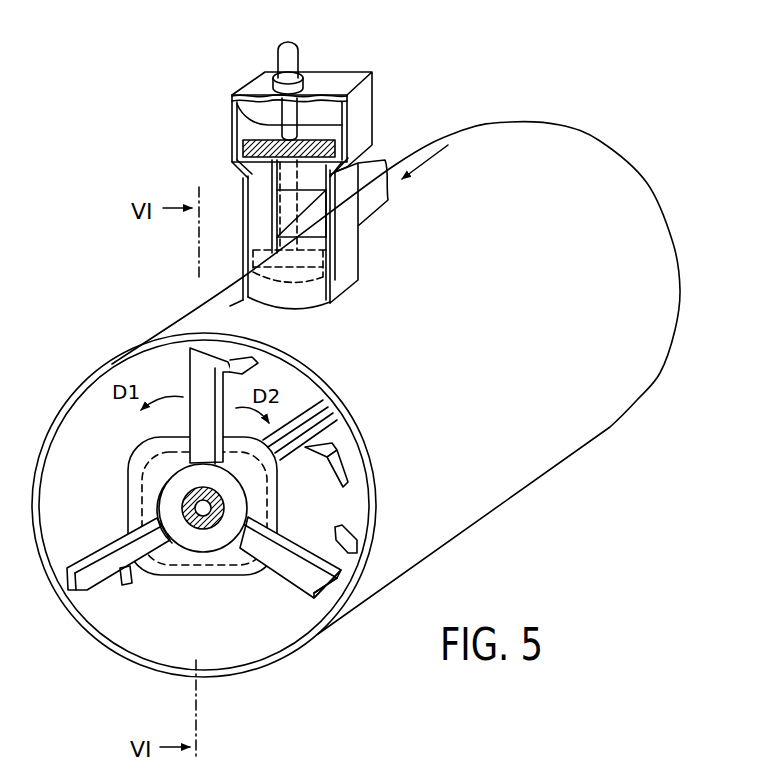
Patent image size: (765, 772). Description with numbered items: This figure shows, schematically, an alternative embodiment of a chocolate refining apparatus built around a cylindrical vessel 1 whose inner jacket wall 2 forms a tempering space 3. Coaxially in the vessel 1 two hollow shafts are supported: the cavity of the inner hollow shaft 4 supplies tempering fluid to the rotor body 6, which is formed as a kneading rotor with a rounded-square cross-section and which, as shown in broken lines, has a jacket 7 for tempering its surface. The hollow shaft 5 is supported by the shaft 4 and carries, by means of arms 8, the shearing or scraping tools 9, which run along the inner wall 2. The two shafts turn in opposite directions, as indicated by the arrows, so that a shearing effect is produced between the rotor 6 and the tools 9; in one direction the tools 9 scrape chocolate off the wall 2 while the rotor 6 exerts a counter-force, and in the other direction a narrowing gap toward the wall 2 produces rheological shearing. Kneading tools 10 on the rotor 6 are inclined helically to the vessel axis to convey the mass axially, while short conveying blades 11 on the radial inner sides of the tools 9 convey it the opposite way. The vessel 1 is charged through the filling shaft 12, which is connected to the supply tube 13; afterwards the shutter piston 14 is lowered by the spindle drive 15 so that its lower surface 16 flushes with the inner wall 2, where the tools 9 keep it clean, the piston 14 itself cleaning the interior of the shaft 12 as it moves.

The cylindrical vessel 1 is at (503, 487).
The inner jacket wall 2 is at (235, 653).
The tempering space 3 is at (275, 661).
The inner hollow shaft 4 is at (193, 530).
The hollow shaft 5 is at (218, 540).
The rotor body 6 is at (127, 490).
The jacket 7 is at (147, 467).
The arms 8 is at (293, 570).
The shearing or scraping tools 9 is at (330, 587).
The kneading tools 10 is at (340, 447).
The conveying blades 11 is at (258, 367).
The filling shaft 12 is at (243, 250).
The supply tube 13 is at (374, 208).
The shutter piston 14 is at (233, 108).
The spindle drive 15 is at (303, 53).
The lower surface 16 is at (243, 180).